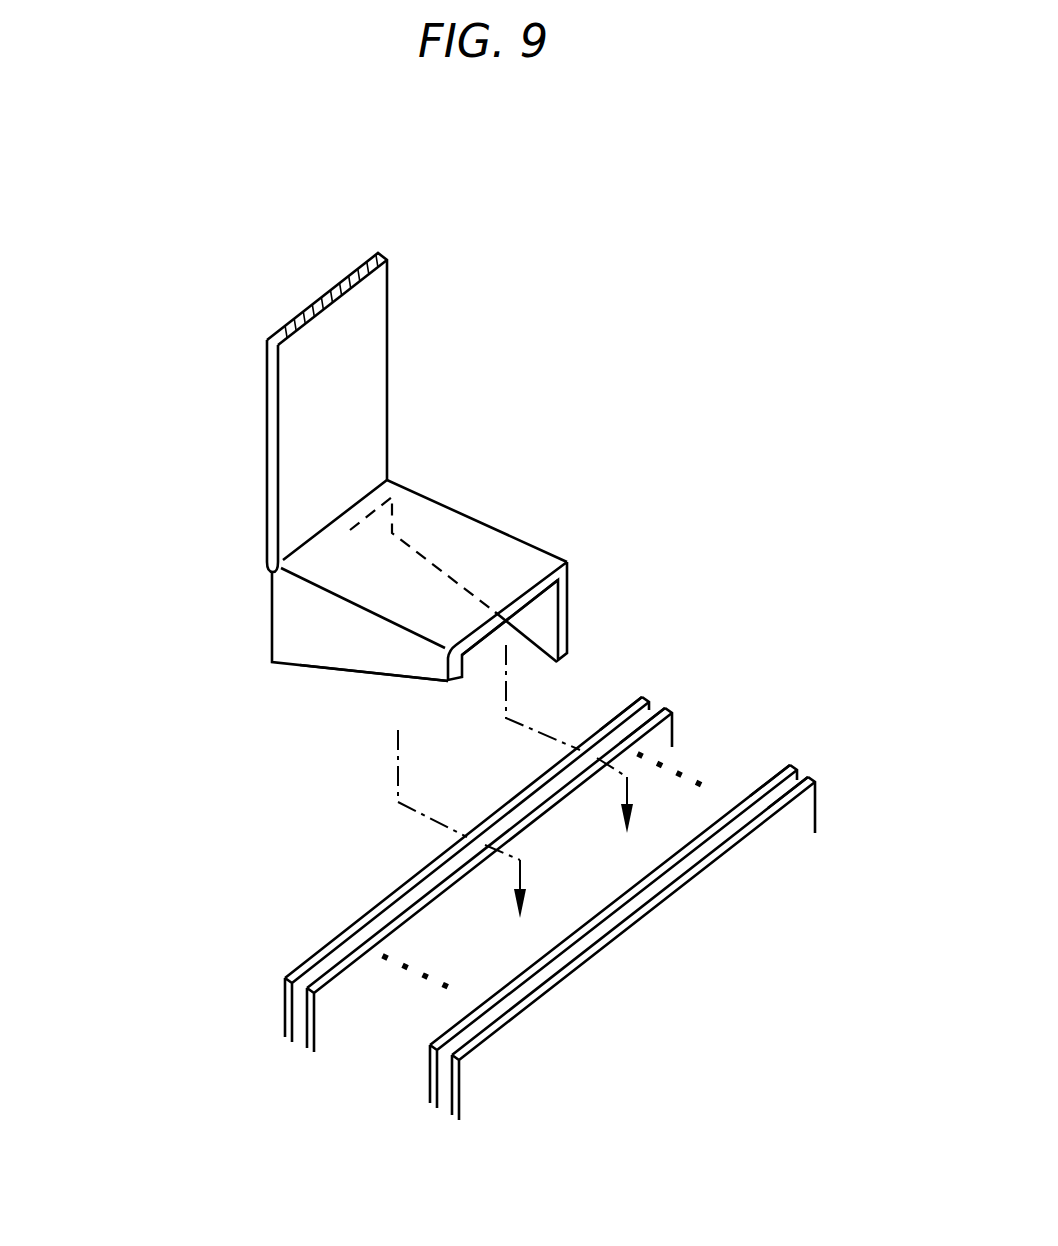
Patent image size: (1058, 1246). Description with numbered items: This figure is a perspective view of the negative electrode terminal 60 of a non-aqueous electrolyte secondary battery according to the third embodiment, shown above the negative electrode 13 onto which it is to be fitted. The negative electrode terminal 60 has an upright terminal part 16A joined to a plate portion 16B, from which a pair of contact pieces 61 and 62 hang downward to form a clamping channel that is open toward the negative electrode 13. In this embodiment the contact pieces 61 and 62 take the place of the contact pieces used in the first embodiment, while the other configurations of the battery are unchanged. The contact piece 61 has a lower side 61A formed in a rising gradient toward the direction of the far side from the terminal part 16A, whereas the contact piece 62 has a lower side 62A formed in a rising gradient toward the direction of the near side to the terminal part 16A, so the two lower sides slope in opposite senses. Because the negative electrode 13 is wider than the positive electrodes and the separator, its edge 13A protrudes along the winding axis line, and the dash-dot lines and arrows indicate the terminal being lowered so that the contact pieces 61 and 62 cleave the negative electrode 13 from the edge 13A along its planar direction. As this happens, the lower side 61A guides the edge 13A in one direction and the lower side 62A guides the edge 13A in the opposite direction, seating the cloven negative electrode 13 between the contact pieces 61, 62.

The negative electrode terminal 60 is at (222, 411).
The terminal part 16A is at (373, 335).
The second plate portion 16B is at (481, 545).
The contact piece 61 is at (302, 629).
The lower side 61A is at (352, 672).
The contact piece 62 is at (563, 608).
The lower side 62A is at (531, 640).
The negative electrode 13 is at (655, 965).
The edge 13A is at (627, 706).